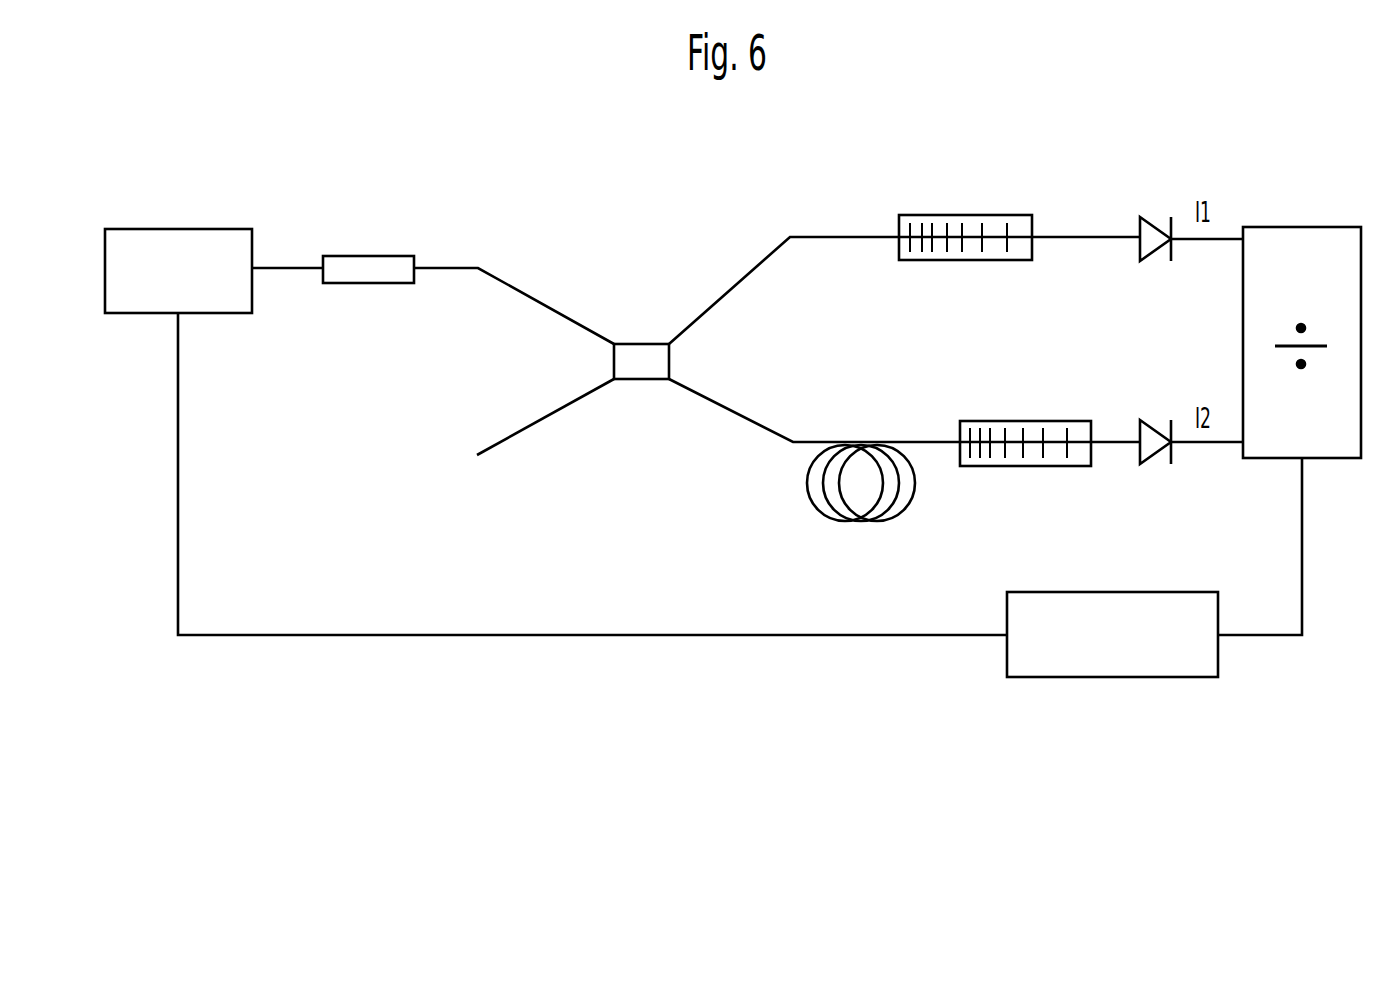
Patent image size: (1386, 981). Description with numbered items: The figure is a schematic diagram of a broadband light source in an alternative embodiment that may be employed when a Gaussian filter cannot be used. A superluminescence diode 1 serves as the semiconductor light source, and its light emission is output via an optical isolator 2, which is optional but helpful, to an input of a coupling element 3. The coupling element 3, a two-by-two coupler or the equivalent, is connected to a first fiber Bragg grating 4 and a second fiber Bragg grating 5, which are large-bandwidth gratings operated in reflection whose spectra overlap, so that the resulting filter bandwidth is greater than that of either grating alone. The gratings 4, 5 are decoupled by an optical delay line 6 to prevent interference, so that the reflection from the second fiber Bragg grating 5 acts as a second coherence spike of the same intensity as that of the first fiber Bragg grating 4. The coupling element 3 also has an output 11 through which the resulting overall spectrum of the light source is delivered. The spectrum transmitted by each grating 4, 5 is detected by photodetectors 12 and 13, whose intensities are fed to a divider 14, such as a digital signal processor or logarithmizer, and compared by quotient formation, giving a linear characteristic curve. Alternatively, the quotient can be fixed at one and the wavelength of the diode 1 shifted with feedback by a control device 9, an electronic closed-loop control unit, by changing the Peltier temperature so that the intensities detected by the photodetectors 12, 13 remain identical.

The superluminescence diode 1 is at (195, 228).
The optical isolator 2 is at (350, 255).
The coupling element 3 is at (632, 343).
The first fiber Bragg grating 4 is at (937, 214).
The second fiber Bragg grating 5 is at (998, 420).
The optical delay line 6 is at (815, 510).
The control device 9 is at (1042, 591).
The output 11 is at (528, 428).
The photodetector 12 is at (1160, 218).
The photodetector 13 is at (1158, 422).
The divider 14 is at (1302, 226).